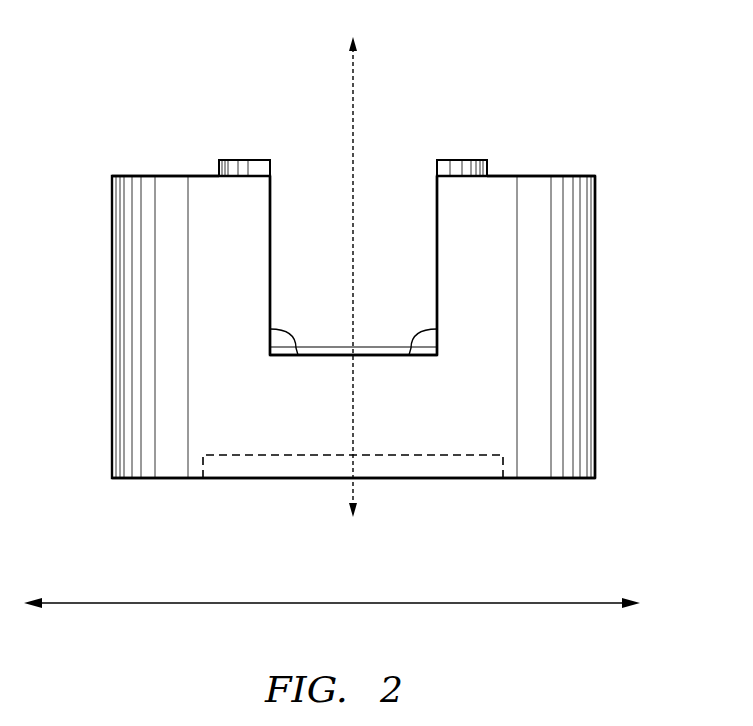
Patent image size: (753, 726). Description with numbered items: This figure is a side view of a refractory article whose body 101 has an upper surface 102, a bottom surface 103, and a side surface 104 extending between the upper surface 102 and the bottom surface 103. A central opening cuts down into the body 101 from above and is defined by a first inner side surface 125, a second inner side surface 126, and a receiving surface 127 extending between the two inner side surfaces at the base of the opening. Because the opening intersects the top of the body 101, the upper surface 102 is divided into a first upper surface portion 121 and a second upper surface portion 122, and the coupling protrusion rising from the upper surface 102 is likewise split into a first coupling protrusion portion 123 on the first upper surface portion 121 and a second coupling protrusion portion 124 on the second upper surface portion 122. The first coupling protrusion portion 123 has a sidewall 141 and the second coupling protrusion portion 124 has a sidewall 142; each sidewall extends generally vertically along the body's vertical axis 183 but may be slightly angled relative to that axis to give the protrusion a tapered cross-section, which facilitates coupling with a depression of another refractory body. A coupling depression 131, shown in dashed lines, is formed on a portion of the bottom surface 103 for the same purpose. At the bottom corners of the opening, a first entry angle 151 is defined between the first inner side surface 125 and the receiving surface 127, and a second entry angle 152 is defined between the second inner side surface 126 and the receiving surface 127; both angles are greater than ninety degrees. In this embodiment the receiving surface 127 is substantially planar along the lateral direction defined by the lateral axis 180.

The body 101 is at (112, 176).
The upper surface 102 is at (154, 159).
The bottom surface 103 is at (130, 480).
The side surface 104 is at (597, 395).
The first upper surface portion 121 is at (125, 175).
The second upper surface portion 122 is at (577, 176).
The first coupling protrusion portion 123 is at (248, 160).
The second coupling protrusion portion 124 is at (455, 160).
The first inner side surface 125 is at (272, 225).
The second inner side surface 126 is at (435, 225).
The receiving surface 127 is at (335, 347).
The coupling depression 131 is at (426, 485).
The sidewall 141 is at (218, 168).
The sidewall 142 is at (487, 168).
The first entry angle 151 is at (294, 330).
The second entry angle 152 is at (437, 325).
The lateral axis 180 is at (398, 604).
The vertical axis 183 is at (358, 75).